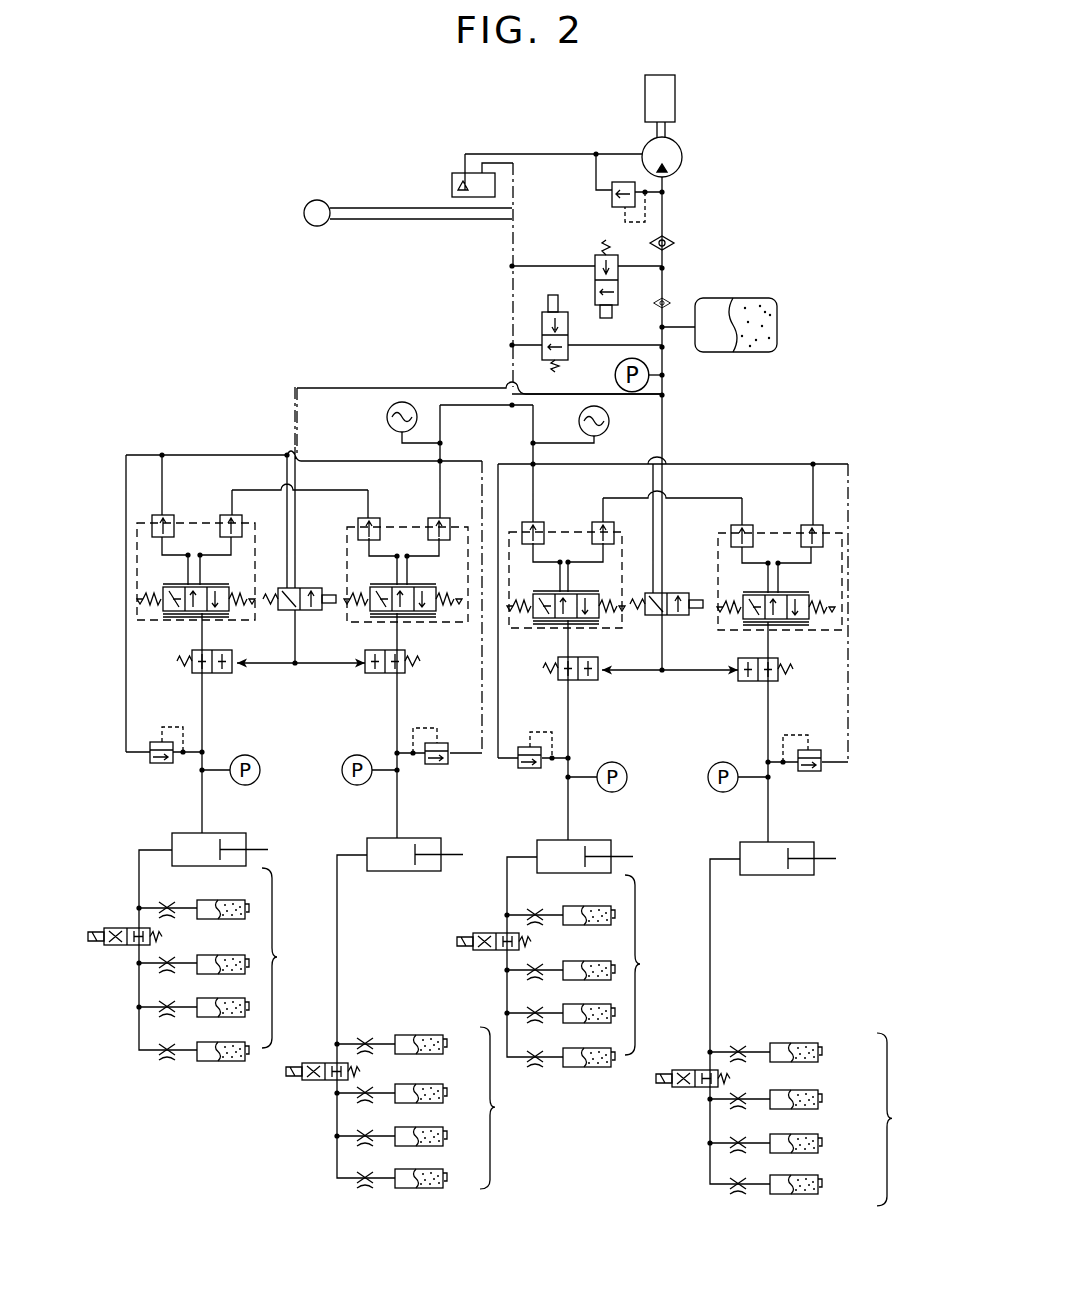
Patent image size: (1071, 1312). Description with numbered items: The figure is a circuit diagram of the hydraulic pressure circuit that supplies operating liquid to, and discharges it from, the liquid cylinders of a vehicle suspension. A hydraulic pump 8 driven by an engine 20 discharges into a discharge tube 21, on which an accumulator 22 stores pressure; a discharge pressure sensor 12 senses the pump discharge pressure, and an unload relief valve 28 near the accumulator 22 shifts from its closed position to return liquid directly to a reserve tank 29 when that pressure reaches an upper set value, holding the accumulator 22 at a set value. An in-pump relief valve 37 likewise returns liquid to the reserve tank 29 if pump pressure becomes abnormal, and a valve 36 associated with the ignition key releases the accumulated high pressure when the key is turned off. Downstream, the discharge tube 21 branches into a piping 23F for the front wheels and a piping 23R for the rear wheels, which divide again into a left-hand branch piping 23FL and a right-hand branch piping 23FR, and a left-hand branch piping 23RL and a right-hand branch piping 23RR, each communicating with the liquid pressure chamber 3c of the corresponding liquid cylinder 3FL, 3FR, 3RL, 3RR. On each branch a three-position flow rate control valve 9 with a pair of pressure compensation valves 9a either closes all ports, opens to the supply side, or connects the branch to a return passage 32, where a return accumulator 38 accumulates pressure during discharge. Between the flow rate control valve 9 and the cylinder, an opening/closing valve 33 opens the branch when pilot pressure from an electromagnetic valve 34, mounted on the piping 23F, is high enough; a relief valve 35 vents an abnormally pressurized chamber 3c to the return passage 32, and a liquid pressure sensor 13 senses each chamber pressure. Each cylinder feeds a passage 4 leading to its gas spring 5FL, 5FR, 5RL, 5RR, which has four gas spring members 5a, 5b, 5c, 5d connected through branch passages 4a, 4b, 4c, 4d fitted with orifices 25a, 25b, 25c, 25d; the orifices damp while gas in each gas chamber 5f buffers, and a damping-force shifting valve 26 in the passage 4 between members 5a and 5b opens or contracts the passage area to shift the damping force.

The engine 20 is at (675, 100).
The hydraulic pump 8 is at (645, 142).
The reserve tank 29 is at (450, 182).
The in-pump relief valve 37 is at (612, 196).
The unload relief valve 28 is at (600, 248).
The return passage 32 is at (512, 282).
The ignition-key valve 36 is at (542, 320).
The accumulator 22 is at (777, 302).
The discharge tube 21 is at (665, 358).
The discharge pressure sensor 12 is at (614, 375).
The piping for the rear wheels 23R is at (318, 383).
The piping for the front wheels 23F is at (667, 440).
The return accumulator 38 is at (631, 443).
The pressure compensation valve 9a is at (170, 512).
The flow rate control valve 9 is at (232, 618).
The electromagnetic valve 34 is at (303, 613).
The opening/closing valve 33 is at (190, 674).
The right-hand branch piping 23RR is at (202, 723).
The left-hand branch piping 23RL is at (397, 702).
The right-hand branch piping 23FR is at (568, 703).
The left-hand branch piping 23FL is at (768, 737).
The relief valve 35 is at (160, 762).
The liquid pressure sensor 13 is at (261, 772).
The liquid cylinder 3RR is at (255, 835).
The liquid cylinder 3RL is at (440, 840).
The liquid cylinder 3FR is at (608, 843).
The liquid cylinder 3FL is at (832, 845).
The liquid pressure chamber 3c is at (171, 832).
The passage 4 is at (128, 862).
The damping-force shifting valve 26 is at (101, 917).
The orifice 25a is at (169, 905).
The orifice 25b is at (170, 959).
The orifice 25c is at (167, 1005).
The orifice 25d is at (169, 1058).
The gas spring member 5a is at (845, 1052).
The gas spring member 5b is at (845, 1100).
The gas spring member 5c is at (845, 1143).
The gas spring member 5d is at (845, 1185).
The gas chamber 5f is at (800, 1042).
The gas spring 5RR is at (294, 958).
The gas spring 5RL is at (520, 1108).
The gas spring 5FR is at (656, 965).
The gas spring 5FL is at (907, 1119).
The branch passage 4a is at (710, 1052).
The branch passage 4b is at (710, 1099).
The branch passage 4c is at (710, 1143).
The branch passage 4d is at (710, 1184).